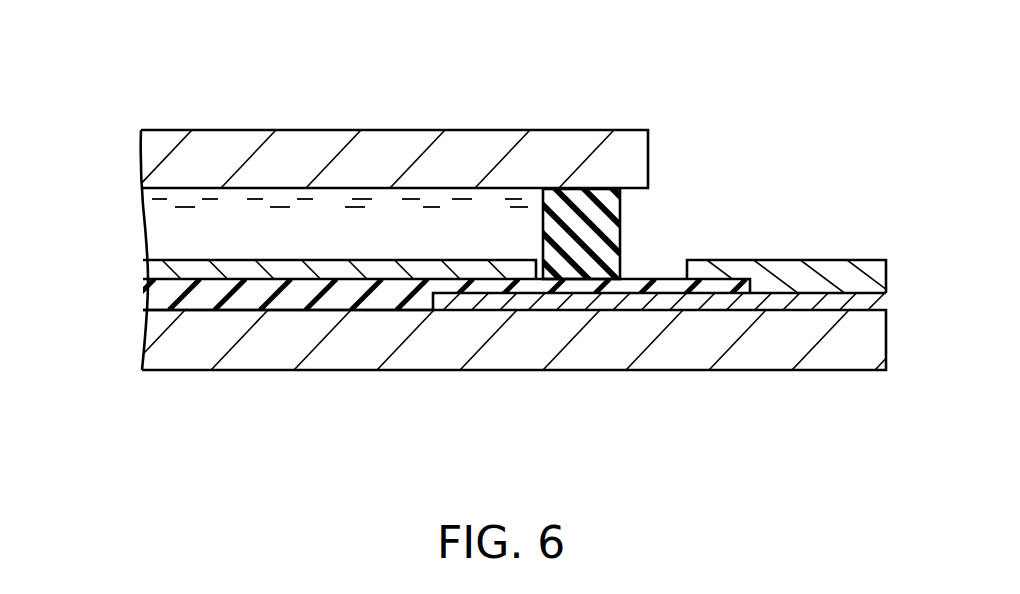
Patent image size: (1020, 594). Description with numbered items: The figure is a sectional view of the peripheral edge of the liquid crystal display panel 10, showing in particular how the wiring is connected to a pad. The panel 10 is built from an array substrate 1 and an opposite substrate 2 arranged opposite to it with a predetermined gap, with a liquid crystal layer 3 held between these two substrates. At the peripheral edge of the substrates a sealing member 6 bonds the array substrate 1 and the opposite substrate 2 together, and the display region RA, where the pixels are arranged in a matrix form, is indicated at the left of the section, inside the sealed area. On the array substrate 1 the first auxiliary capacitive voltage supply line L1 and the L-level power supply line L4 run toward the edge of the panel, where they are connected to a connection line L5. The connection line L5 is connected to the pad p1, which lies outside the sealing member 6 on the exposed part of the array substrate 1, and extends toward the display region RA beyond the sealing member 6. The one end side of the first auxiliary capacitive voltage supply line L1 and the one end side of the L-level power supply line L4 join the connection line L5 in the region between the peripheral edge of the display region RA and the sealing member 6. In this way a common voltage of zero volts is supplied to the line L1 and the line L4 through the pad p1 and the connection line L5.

The liquid crystal display panel 10 is at (686, 78).
The opposite substrate 2 is at (108, 162).
The liquid crystal layer 3 is at (152, 227).
The array substrate 1 is at (108, 320).
The sealing member 6 is at (605, 222).
The first auxiliary capacitive voltage supply line L1 is at (396, 262).
The L-level power supply line L4 is at (398, 390).
The connection line L5 is at (637, 303).
The pad p1 is at (805, 275).
The display region RA is at (204, 126).